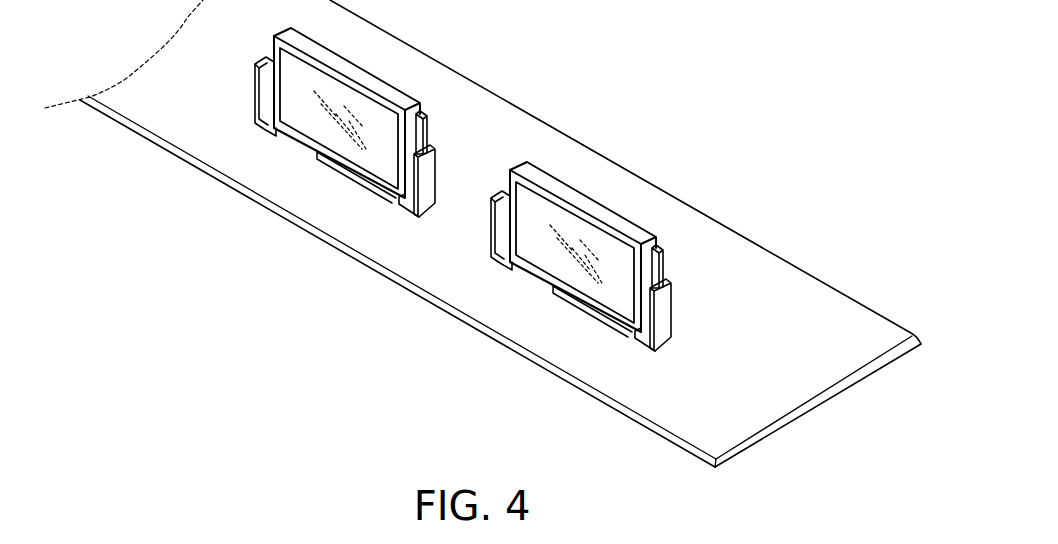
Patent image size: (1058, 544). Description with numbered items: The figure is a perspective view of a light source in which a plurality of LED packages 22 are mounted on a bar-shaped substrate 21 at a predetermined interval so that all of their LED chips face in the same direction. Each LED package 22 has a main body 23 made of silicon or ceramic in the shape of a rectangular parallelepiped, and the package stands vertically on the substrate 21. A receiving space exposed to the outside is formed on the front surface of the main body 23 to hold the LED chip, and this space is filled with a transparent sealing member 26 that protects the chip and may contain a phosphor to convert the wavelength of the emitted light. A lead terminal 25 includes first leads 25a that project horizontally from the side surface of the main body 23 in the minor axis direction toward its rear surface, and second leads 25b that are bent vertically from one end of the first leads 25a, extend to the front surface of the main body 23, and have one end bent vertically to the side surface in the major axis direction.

The substrate 21 is at (813, 387).
The LED package 22 is at (648, 221).
The main body 23 is at (538, 173).
The lead terminal 25 is at (752, 237).
The first lead 25a is at (663, 247).
The second lead 25b is at (664, 308).
The sealing member 26 is at (560, 263).